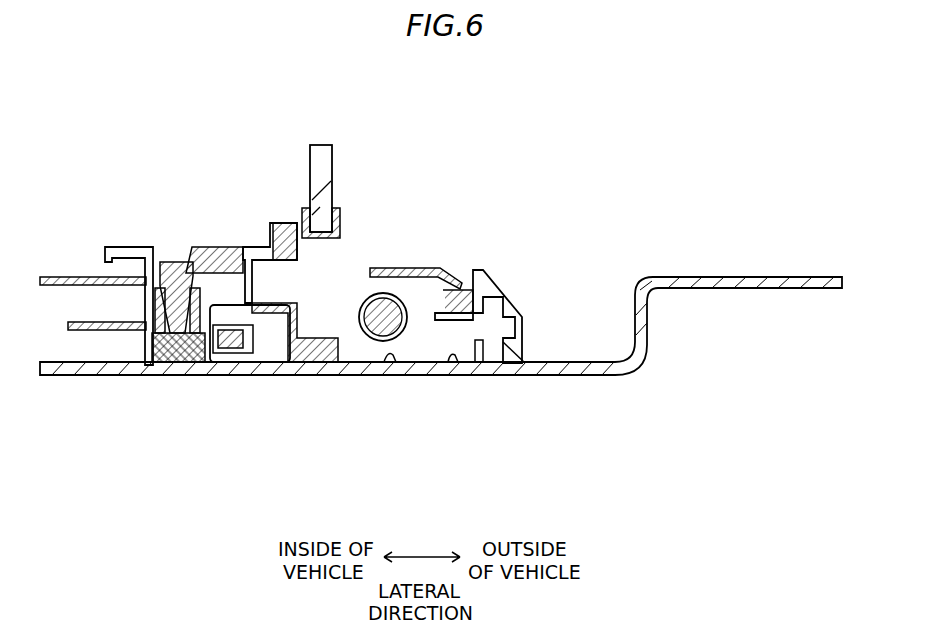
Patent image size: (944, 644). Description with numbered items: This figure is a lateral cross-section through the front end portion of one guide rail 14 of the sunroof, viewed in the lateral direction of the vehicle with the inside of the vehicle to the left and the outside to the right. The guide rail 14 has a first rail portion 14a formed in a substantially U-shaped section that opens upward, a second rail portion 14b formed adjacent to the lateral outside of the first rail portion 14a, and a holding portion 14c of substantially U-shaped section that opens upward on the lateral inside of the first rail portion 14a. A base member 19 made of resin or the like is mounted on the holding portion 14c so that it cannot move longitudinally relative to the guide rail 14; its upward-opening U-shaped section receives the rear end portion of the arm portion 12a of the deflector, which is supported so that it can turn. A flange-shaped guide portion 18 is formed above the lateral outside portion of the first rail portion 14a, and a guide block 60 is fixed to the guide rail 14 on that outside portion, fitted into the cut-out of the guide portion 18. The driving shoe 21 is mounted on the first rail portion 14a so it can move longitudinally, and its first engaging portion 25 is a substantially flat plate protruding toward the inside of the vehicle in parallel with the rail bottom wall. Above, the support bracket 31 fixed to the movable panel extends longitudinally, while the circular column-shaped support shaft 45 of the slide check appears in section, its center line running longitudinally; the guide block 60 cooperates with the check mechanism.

The arm portion 12a is at (160, 262).
The guide rail 14 is at (578, 378).
The first rail portion 14a is at (392, 365).
The second rail portion 14b is at (488, 366).
The holding portion 14c is at (170, 370).
The guide portion 18 is at (395, 268).
The base member 19 is at (150, 295).
The driving shoe 21 is at (270, 245).
The first engaging portion 25 is at (215, 247).
The support bracket 31 is at (335, 168).
The support shaft 45 is at (360, 308).
The guide block 60 is at (457, 278).